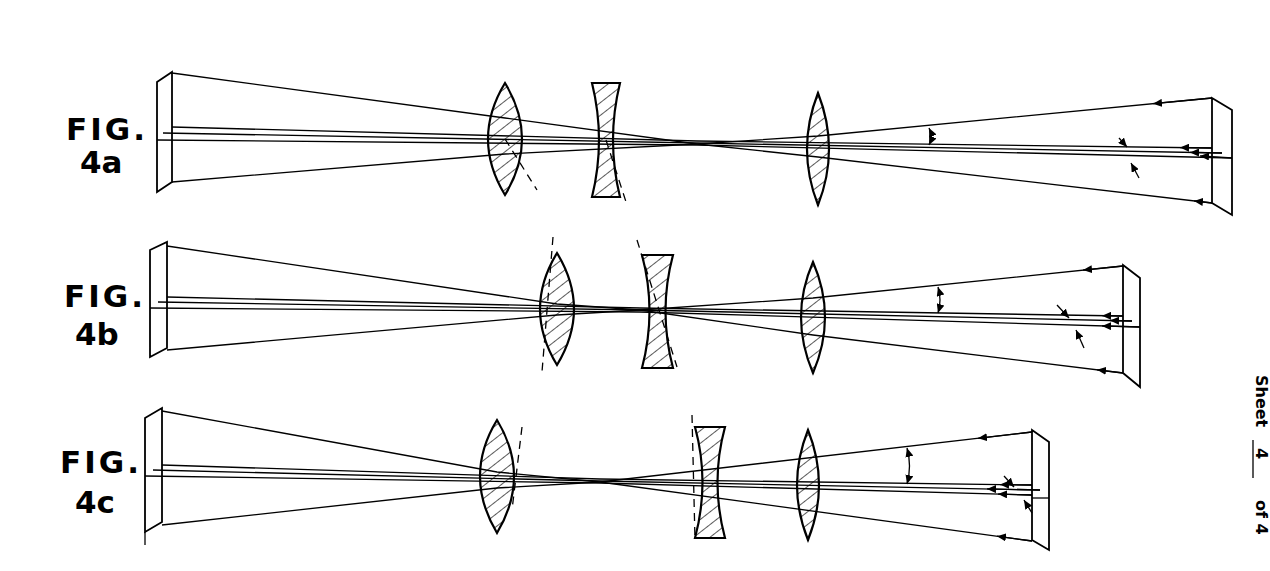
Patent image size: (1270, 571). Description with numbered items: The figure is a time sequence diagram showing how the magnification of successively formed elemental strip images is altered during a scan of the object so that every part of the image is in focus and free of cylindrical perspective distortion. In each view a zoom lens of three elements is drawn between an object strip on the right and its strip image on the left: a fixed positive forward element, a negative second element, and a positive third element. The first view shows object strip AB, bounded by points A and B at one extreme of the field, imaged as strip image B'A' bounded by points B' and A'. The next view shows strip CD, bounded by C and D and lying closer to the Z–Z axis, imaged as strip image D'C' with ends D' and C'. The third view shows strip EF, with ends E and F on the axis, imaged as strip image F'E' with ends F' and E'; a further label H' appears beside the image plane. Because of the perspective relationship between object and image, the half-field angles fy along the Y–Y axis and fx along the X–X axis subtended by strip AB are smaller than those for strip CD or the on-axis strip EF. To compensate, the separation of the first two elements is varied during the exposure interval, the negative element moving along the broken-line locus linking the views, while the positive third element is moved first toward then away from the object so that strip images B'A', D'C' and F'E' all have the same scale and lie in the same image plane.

In FIG. 4A, the object strip endpoint A is at (1192, 91).
In FIG. 4A, the object strip endpoint B is at (1208, 219).
In FIG. 4A, the image point A' is at (684, 154).
In FIG. 4A, the image point B' is at (683, 129).
In FIG. 4B, the object strip endpoint C is at (1113, 260).
In FIG. 4B, the object strip endpoint D is at (1118, 385).
In FIG. 4B, the image point C' is at (637, 320).
In FIG. 4B, the image point D' is at (636, 299).
In FIG. 4C, the object strip endpoint E is at (1014, 425).
In FIG. 4C, the object strip endpoint F is at (1018, 551).
In FIG. 4C, the image point E' is at (592, 487).
In FIG. 4C, the image point F' is at (591, 467).
In FIG. 4C, the image point H' is at (156, 551).
In FIG. 4A, the half-field angle along the X–X axis fx is at (1125, 162).
In FIG. 4B, the half-field angle along the X–X axis fx is at (1070, 329).
In FIG. 4C, the half-field angle along the X–X axis fx is at (1018, 499).
In FIG. 4A, the half-field angle along the Y–Y axis fy is at (942, 139).
In FIG. 4B, the half-field angle along the Y–Y axis fy is at (952, 300).
In FIG. 4C, the half-field angle along the Y–Y axis fy is at (920, 466).